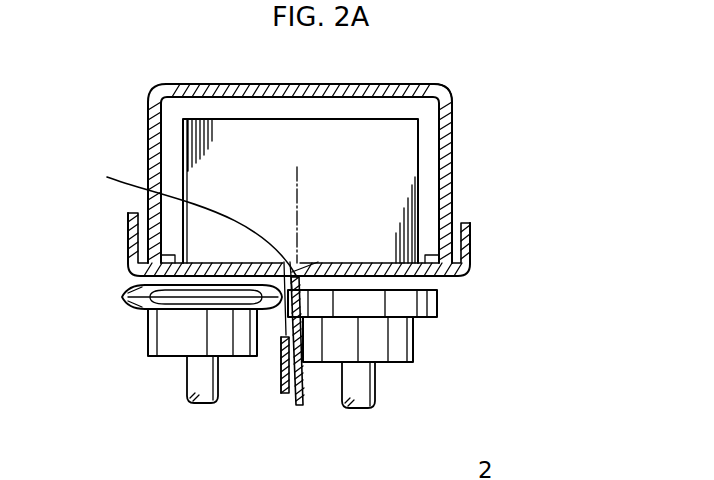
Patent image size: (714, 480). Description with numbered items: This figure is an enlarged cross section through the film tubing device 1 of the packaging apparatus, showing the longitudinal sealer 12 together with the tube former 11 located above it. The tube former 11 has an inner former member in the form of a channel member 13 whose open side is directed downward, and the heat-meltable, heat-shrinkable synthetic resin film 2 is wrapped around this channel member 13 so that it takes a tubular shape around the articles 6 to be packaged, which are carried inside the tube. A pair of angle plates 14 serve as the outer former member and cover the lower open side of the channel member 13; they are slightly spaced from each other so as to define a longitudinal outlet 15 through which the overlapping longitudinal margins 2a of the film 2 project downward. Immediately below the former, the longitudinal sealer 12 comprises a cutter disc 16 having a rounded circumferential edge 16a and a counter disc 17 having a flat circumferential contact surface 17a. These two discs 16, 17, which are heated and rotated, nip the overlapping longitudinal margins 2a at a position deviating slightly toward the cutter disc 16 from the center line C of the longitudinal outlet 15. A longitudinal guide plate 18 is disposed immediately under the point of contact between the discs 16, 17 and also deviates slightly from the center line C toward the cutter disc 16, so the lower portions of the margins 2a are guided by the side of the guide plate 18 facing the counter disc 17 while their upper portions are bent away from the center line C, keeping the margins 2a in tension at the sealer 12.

The film tubing device 1 is at (478, 299).
The synthetic resin film 2 is at (298, 84).
The longitudinal margins 2a is at (290, 398).
The articles 6 is at (366, 118).
The tube former 11 is at (458, 218).
The longitudinal sealer 12 is at (231, 406).
The channel member 13 is at (444, 97).
The angle plates 14 is at (128, 256).
The longitudinal outlet 15 is at (199, 249).
The cutter disc 16 is at (182, 302).
The rounded circumferential edge 16a is at (122, 298).
The counter disc 17 is at (418, 320).
The flat circumferential contact surface 17a is at (421, 314).
The longitudinal guide plate 18 is at (280, 383).
The center line C is at (295, 200).